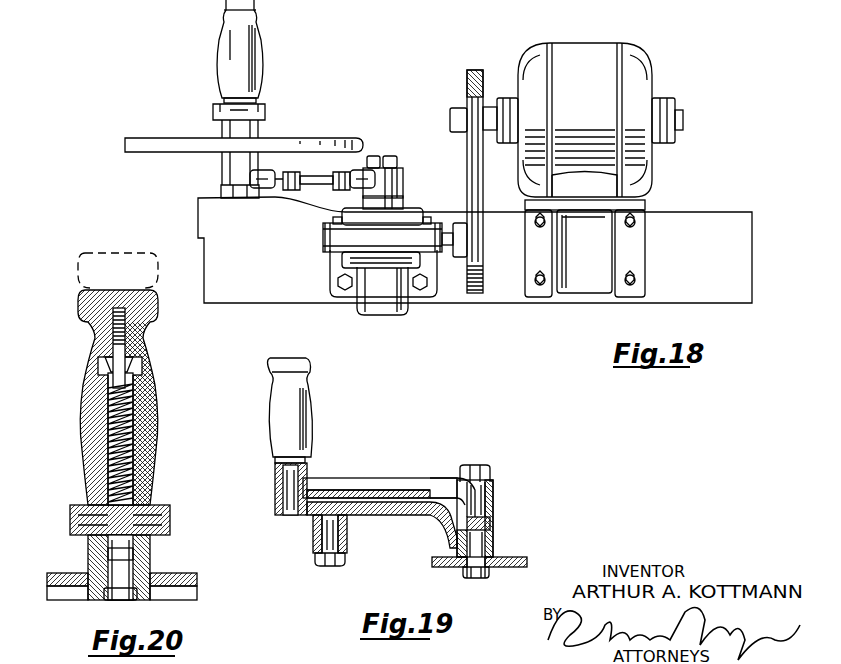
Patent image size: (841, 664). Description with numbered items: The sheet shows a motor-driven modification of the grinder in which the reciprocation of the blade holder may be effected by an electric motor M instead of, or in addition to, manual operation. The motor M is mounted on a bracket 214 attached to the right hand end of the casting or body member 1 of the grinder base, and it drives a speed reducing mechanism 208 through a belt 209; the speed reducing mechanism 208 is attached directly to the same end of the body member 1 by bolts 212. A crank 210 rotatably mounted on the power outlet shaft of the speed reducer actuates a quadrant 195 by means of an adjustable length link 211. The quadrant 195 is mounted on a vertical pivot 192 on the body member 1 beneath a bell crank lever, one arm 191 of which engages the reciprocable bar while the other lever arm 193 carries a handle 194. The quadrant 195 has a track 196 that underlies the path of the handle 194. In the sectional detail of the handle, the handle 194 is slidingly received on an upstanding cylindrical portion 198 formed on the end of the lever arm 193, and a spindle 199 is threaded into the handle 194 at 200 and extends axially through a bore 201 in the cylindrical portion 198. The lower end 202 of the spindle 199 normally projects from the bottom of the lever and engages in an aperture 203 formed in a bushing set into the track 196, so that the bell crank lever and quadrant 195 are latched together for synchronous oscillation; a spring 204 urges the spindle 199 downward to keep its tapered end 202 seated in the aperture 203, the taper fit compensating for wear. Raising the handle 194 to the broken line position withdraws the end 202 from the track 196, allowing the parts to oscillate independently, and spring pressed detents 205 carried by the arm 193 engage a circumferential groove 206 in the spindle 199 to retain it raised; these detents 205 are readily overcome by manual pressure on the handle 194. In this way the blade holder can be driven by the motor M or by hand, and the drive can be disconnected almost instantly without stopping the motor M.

In FIG. 18, the body member 1 is at (708, 214).
In FIG. 18, the electric motor M is at (645, 98).
In FIG. 19, the arm 191 is at (490, 517).
In FIG. 19, the vertical pivot 192 is at (477, 470).
In FIG. 19, the lever arm 193 is at (378, 483).
In FIG. 18, the handle 194 is at (259, 39).
In FIG. 20, the handle 194 is at (157, 436).
In FIG. 19, the handle 194 is at (303, 408).
In FIG. 18, the quadrant 195 is at (150, 137).
In FIG. 20, the quadrant 195 is at (183, 592).
In FIG. 19, the quadrant 195 is at (385, 517).
In FIG. 20, the track 196 is at (190, 575).
In FIG. 20, the cylindrical portion 198 is at (143, 388).
In FIG. 20, the spindle 199 is at (115, 356).
In FIG. 20, the threaded connection 200 is at (143, 333).
In FIG. 20, the bore 201 is at (130, 412).
In FIG. 20, the lower end of spindle 202 is at (118, 587).
In FIG. 20, the aperture 203 is at (115, 575).
In FIG. 20, the spring 204 is at (97, 468).
In FIG. 20, the spring pressed detents 205 is at (110, 512).
In FIG. 20, the circumferential groove 206 is at (133, 553).
In FIG. 18, the speed reducing mechanism 208 is at (376, 302).
In FIG. 18, the belt 209 is at (470, 147).
In FIG. 18, the crank 210 is at (403, 199).
In FIG. 18, the adjustable length link 211 is at (312, 182).
In FIG. 18, the bolts 212 is at (345, 290).
In FIG. 18, the bracket 214 is at (572, 282).